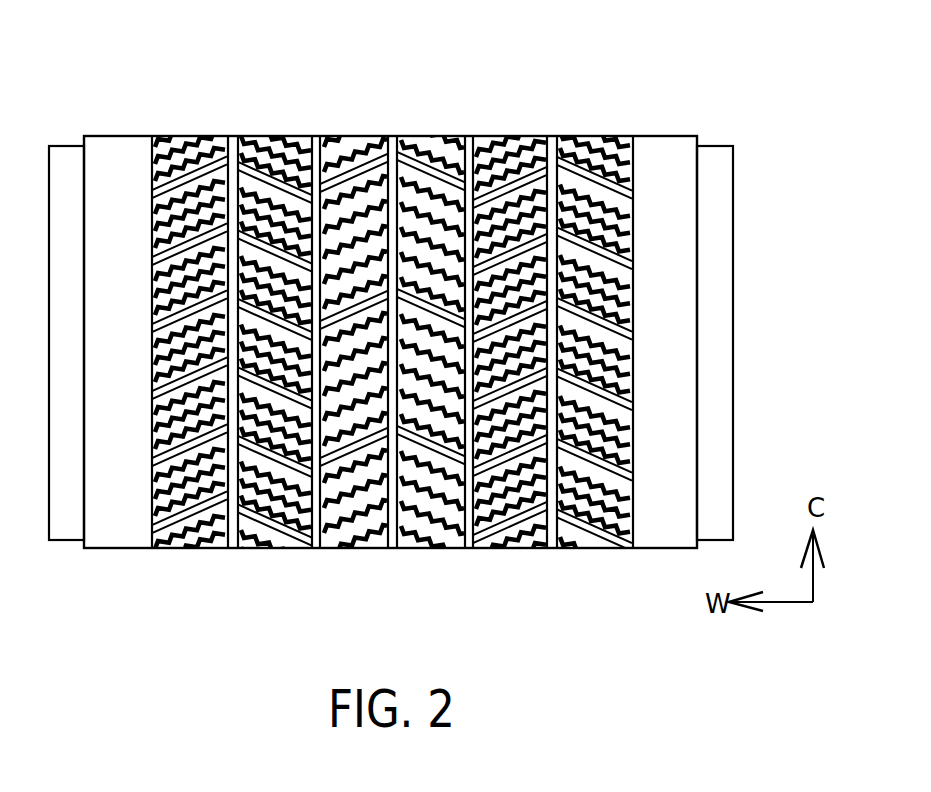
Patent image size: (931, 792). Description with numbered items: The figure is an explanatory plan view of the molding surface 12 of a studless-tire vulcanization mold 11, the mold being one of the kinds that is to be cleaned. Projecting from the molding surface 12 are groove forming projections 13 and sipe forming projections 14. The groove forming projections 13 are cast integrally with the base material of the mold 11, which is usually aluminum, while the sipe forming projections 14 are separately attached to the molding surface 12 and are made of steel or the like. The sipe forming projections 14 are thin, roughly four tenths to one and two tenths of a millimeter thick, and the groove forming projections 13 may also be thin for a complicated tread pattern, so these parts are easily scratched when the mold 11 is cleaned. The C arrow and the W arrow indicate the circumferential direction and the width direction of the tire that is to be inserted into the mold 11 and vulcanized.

The mold 11 is at (143, 136).
The molding surface 12 is at (374, 176).
The groove forming projections 13 is at (224, 163).
The sipe forming projections 14 is at (350, 170).